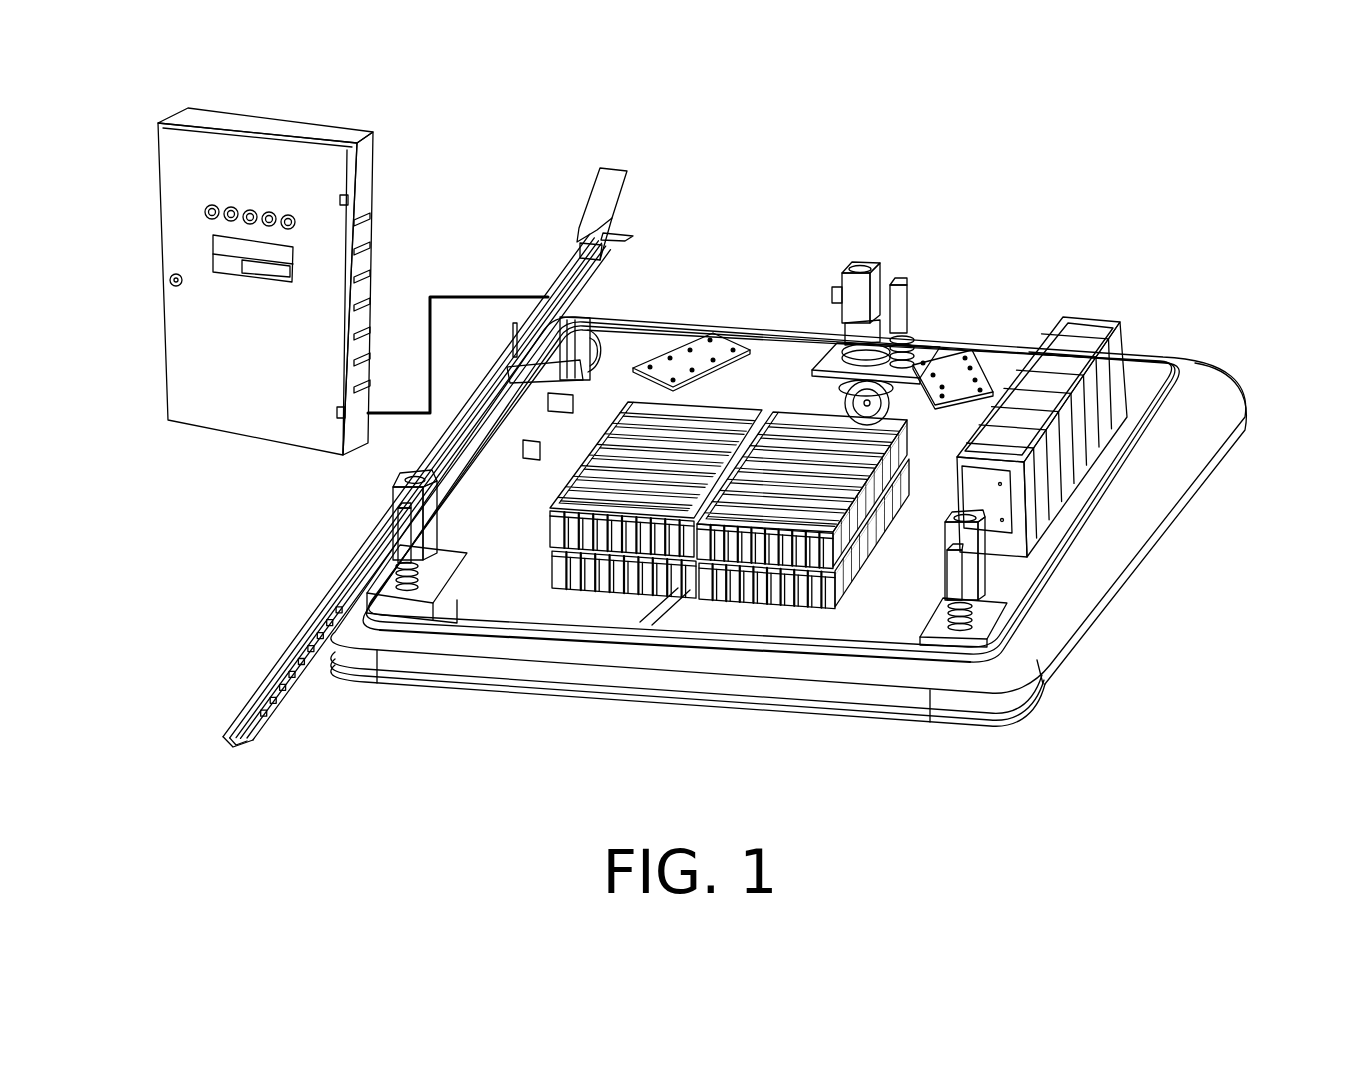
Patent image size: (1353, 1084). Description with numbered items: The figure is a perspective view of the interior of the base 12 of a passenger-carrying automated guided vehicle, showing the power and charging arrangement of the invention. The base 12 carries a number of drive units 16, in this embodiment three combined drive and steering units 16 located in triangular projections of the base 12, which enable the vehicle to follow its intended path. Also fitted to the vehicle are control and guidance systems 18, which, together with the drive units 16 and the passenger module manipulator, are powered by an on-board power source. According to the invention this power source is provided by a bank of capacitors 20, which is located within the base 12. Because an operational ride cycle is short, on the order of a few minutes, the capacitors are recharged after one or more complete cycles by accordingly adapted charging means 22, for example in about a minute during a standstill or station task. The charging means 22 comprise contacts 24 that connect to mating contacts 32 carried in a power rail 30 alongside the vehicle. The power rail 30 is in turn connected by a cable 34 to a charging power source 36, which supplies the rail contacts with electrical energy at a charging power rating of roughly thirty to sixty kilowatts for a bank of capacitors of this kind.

The base 12 is at (990, 677).
The drive units 16 is at (398, 495).
The control and guidance systems 18 is at (1083, 330).
The bank of capacitors 20 is at (580, 575).
The charging means 22 is at (777, 407).
The contacts 24 is at (583, 323).
The power rail 30 is at (255, 697).
The mating contacts 32 is at (296, 680).
The cable 34 is at (542, 292).
The charging power source 36 is at (362, 183).